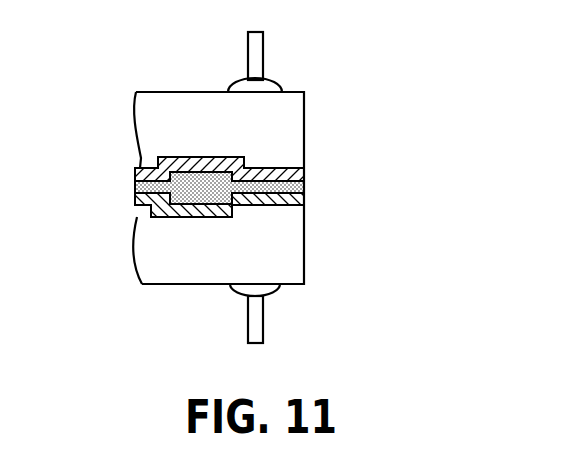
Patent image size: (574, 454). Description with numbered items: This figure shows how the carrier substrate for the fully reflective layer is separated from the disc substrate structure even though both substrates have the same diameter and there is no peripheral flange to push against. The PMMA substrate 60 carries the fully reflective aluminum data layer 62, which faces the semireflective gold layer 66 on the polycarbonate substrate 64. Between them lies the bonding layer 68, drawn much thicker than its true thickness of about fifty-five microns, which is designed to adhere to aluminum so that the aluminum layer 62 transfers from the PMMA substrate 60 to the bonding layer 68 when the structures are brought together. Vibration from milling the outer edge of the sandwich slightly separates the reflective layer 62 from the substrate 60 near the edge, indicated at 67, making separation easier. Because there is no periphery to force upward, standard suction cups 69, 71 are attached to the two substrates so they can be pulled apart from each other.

The PMMA substrate 60 is at (304, 99).
The fully reflective aluminum data layer 62 is at (299, 167).
The substrate 64 is at (304, 253).
The semireflective gold layer 66 is at (304, 200).
The separation of fully reflective layer from substrate near edge 67 is at (304, 185).
The bonding layer 68 is at (135, 188).
The suction cup 69 is at (263, 48).
The suction cup 71 is at (263, 323).